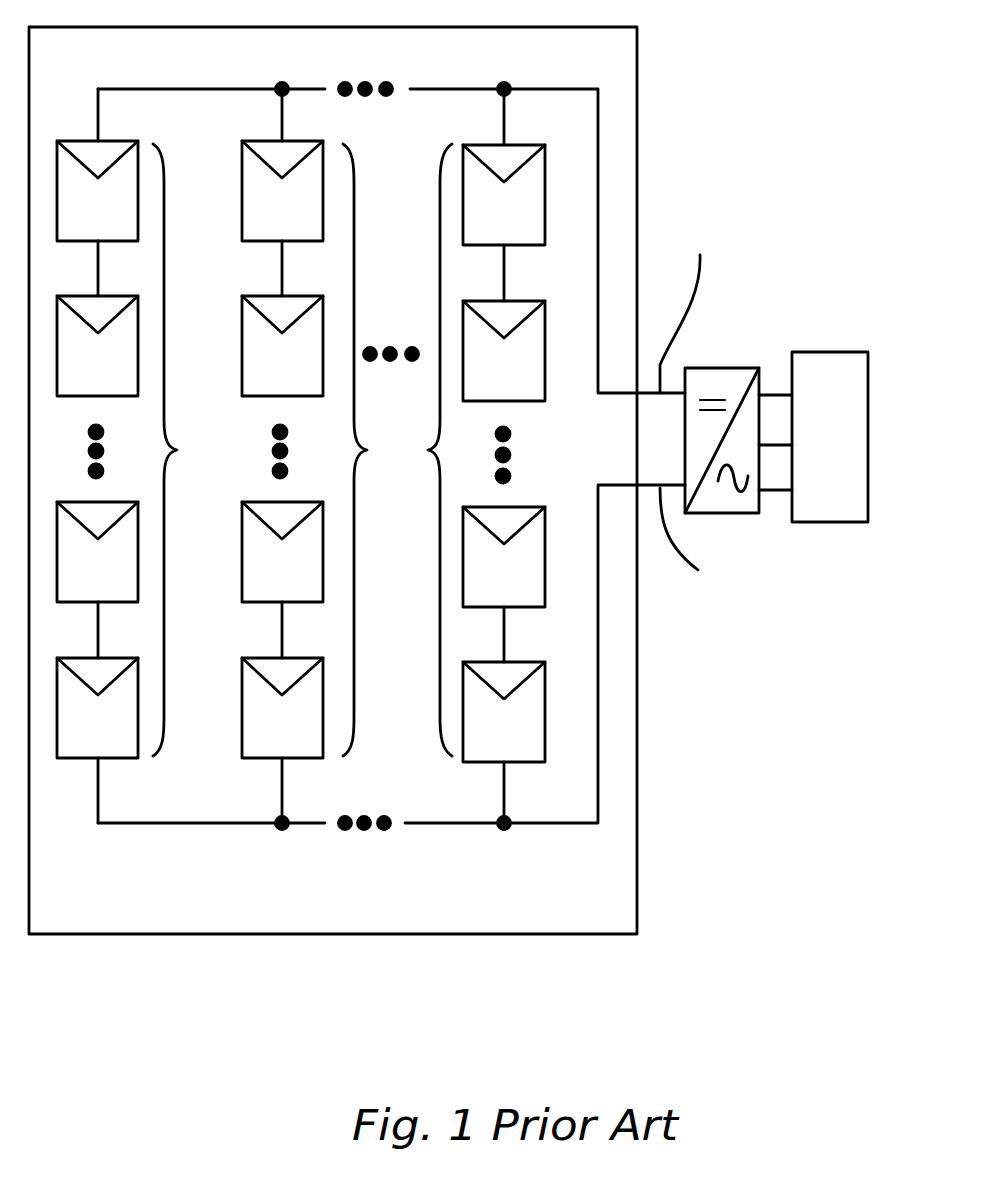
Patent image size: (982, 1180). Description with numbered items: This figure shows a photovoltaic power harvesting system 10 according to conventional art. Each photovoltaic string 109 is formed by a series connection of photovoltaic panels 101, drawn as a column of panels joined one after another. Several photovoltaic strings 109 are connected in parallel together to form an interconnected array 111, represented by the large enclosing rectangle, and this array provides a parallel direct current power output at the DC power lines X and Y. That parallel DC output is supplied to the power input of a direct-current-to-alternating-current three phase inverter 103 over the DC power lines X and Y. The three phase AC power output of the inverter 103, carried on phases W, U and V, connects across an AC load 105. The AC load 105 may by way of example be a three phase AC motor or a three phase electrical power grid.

The photovoltaic power harvesting system 10 is at (352, 992).
The photovoltaic panel 101 is at (301, 456).
The DC-to-AC three phase inverter 103 is at (715, 368).
The AC load 105 is at (830, 437).
The photovoltaic string 109 is at (302, 450).
The interconnected array 111 is at (133, 934).